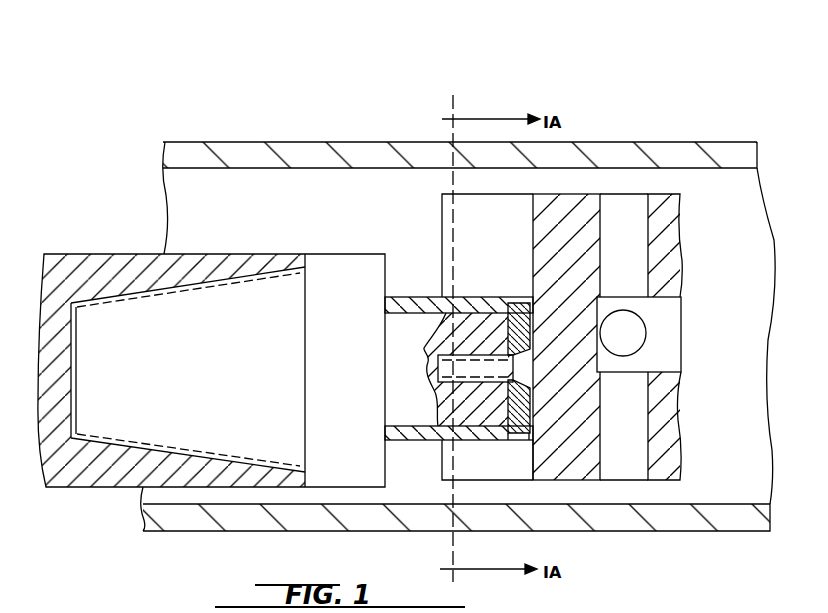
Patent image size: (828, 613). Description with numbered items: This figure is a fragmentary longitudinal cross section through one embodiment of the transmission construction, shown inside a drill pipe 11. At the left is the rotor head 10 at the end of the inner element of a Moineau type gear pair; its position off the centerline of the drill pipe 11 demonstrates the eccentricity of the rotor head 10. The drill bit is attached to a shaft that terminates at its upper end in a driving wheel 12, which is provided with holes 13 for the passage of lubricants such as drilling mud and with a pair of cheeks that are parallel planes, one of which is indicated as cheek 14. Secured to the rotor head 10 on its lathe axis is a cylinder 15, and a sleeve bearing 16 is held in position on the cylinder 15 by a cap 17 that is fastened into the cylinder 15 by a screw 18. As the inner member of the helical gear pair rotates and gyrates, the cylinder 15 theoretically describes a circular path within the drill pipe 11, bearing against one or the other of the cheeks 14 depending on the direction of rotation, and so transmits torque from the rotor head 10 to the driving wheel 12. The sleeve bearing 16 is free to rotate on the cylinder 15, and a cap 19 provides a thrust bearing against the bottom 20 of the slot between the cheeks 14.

The rotor head 10 is at (98, 253).
The drill pipe 11 is at (243, 147).
The driving wheel 12 is at (560, 194).
The holes 13 is at (647, 247).
The cheek 14 is at (448, 209).
The cylinder 15 is at (473, 313).
The sleeve bearing 16 is at (412, 441).
The cap 17 is at (528, 316).
The screw 18 is at (527, 377).
The cap 19 is at (517, 440).
The bottom of the slot 20 is at (530, 440).